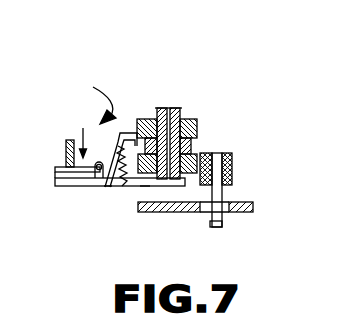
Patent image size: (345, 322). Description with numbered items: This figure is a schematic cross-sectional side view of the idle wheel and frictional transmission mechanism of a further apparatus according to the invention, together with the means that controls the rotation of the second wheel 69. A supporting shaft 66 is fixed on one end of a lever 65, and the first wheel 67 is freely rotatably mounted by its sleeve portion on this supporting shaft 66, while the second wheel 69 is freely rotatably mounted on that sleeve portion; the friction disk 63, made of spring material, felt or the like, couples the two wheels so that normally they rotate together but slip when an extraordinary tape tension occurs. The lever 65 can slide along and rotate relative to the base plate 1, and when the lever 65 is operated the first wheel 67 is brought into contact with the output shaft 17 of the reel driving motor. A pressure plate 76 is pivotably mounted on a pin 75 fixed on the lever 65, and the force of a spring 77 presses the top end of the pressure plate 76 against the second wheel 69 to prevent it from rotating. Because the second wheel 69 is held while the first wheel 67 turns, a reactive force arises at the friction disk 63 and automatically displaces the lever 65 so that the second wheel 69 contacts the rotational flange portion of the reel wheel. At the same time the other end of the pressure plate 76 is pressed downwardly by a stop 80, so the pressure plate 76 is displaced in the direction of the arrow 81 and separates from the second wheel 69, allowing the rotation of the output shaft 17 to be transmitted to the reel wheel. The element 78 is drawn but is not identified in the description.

The base plate 1 is at (169, 212).
The output shaft 17 is at (233, 172).
The friction disk 63 is at (193, 148).
The lever 65 is at (120, 189).
The supporting shaft 66 is at (172, 106).
The first wheel 67 is at (146, 180).
The second wheel 69 is at (196, 120).
The pin 75 is at (99, 163).
The pressure plate 76 is at (120, 132).
The spring 77 is at (114, 189).
The rail 78 is at (58, 184).
The stop 80 is at (66, 152).
The arrow 81 is at (94, 88).